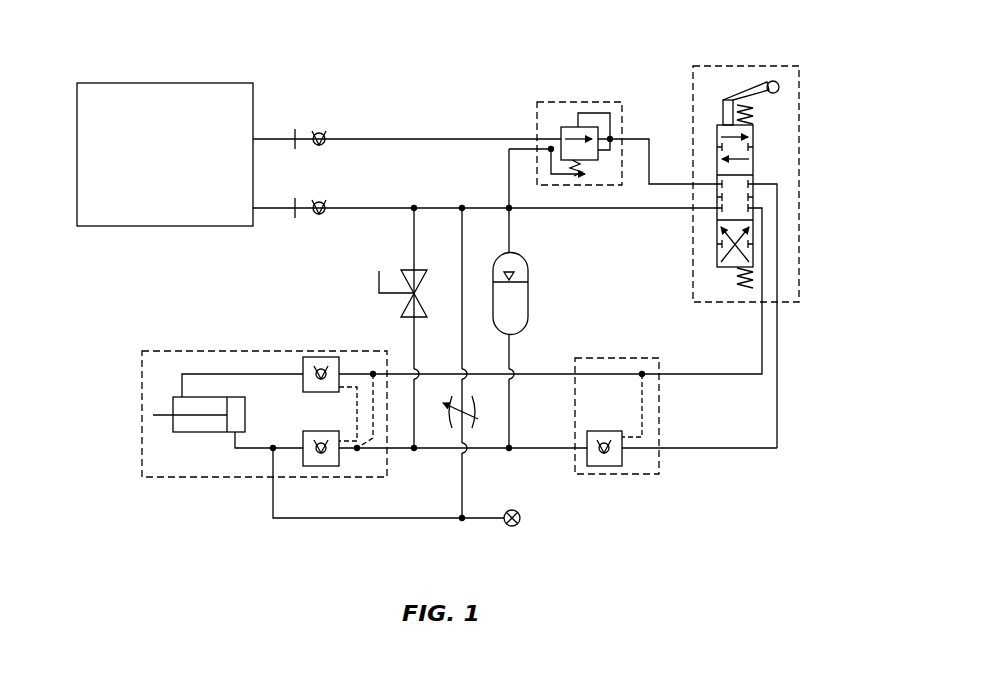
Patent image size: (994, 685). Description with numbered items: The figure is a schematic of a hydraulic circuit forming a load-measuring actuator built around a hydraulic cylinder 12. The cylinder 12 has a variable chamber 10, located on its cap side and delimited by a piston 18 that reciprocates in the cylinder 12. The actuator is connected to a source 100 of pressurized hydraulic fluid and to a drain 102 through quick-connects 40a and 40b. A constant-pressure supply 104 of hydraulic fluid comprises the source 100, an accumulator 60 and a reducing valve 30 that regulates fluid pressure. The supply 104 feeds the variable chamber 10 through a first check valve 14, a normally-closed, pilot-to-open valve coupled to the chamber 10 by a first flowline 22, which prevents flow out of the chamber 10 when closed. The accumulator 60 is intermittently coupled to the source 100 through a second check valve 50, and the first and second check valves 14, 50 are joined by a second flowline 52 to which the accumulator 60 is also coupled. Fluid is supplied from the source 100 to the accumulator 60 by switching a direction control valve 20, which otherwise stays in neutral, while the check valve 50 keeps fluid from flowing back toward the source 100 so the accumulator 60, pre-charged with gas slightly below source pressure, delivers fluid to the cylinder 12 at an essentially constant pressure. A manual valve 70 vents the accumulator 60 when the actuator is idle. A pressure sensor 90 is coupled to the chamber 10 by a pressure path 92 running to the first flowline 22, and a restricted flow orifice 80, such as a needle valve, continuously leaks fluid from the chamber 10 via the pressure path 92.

The variable chamber 10 is at (235, 410).
The hydraulic cylinder 12 is at (198, 432).
The first check valve 14 is at (303, 455).
The piston 18 is at (212, 412).
The direction control valve 20 is at (745, 66).
The first flowline 22 is at (246, 447).
The reducing valve 30 is at (581, 100).
The quick-connect 40a is at (316, 133).
The quick-connect 40b is at (318, 215).
The second check valve 50 is at (653, 476).
The second flowline 52 is at (484, 452).
The accumulator 60 is at (530, 295).
The manual valve 70 is at (379, 293).
The restricted flow orifice 80 is at (475, 405).
The pressure sensor 90 is at (521, 518).
The pressure path 92 is at (330, 520).
The source of pressurized hydraulic fluid 100 is at (262, 139).
The drain 102 is at (262, 208).
The constant-pressure supply 104 is at (404, 451).